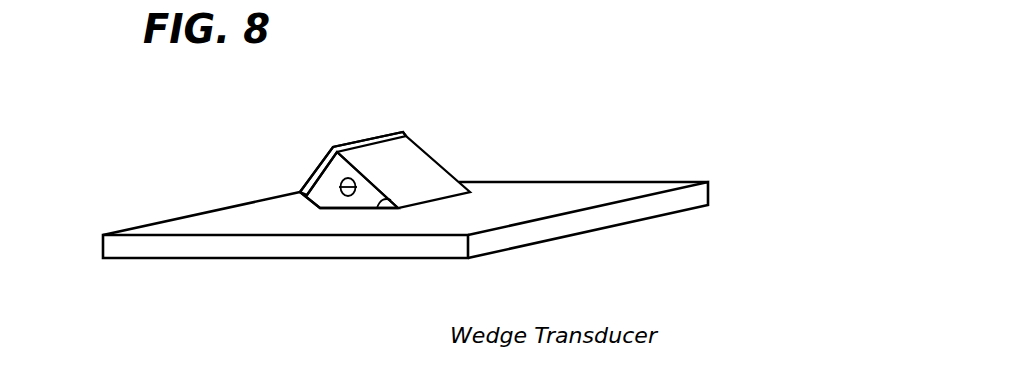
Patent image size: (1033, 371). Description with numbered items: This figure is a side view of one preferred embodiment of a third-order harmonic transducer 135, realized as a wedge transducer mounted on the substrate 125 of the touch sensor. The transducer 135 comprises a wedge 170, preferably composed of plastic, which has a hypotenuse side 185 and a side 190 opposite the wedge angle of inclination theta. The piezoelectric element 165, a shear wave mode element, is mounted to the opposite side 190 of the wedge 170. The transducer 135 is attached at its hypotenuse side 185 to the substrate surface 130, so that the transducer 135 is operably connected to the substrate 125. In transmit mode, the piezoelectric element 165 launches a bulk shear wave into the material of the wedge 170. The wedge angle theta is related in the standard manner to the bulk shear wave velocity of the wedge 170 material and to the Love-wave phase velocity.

The substrate 125 is at (469, 177).
The substrate surface 130 is at (568, 195).
The transducer 135 is at (383, 191).
The piezoelectric element 165 is at (351, 146).
The wedge 170 is at (413, 165).
The hypotenuse side 185 is at (349, 208).
The side opposite wedge angle 190 is at (304, 181).